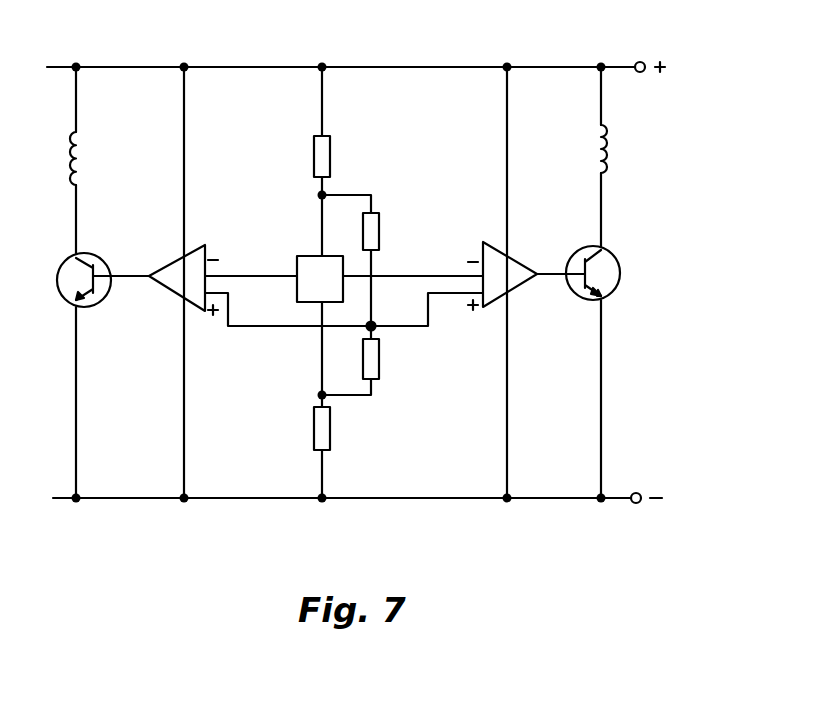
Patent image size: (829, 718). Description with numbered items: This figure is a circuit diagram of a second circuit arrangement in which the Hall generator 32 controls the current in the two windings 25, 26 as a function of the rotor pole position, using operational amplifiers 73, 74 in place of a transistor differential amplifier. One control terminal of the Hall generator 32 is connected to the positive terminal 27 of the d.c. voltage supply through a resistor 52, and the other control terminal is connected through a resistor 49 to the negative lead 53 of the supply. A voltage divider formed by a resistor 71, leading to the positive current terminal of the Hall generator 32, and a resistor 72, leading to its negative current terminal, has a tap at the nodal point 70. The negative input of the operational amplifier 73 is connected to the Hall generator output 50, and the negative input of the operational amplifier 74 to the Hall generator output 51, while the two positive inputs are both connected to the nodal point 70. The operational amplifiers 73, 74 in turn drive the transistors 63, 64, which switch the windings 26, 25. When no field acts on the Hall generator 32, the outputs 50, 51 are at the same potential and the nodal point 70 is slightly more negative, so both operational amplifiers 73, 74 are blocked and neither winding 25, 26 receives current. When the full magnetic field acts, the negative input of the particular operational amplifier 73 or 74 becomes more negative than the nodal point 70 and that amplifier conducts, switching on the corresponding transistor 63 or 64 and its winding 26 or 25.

The winding 25 is at (608, 150).
The winding 26 is at (84, 157).
The positive terminal 27 is at (644, 62).
The Hall generator 32 is at (300, 291).
The resistor 49 is at (326, 432).
The Hall generator output 50 is at (242, 274).
The Hall generator output 51 is at (416, 274).
The resistor 52 is at (331, 154).
The negative lead 53 is at (612, 493).
The transistor 63 is at (92, 298).
The transistor 64 is at (620, 268).
The nodal point 70 is at (375, 320).
The resistor 71 is at (372, 230).
The resistor 72 is at (375, 366).
The operational amplifier 73 is at (172, 262).
The operational amplifier 74 is at (514, 268).